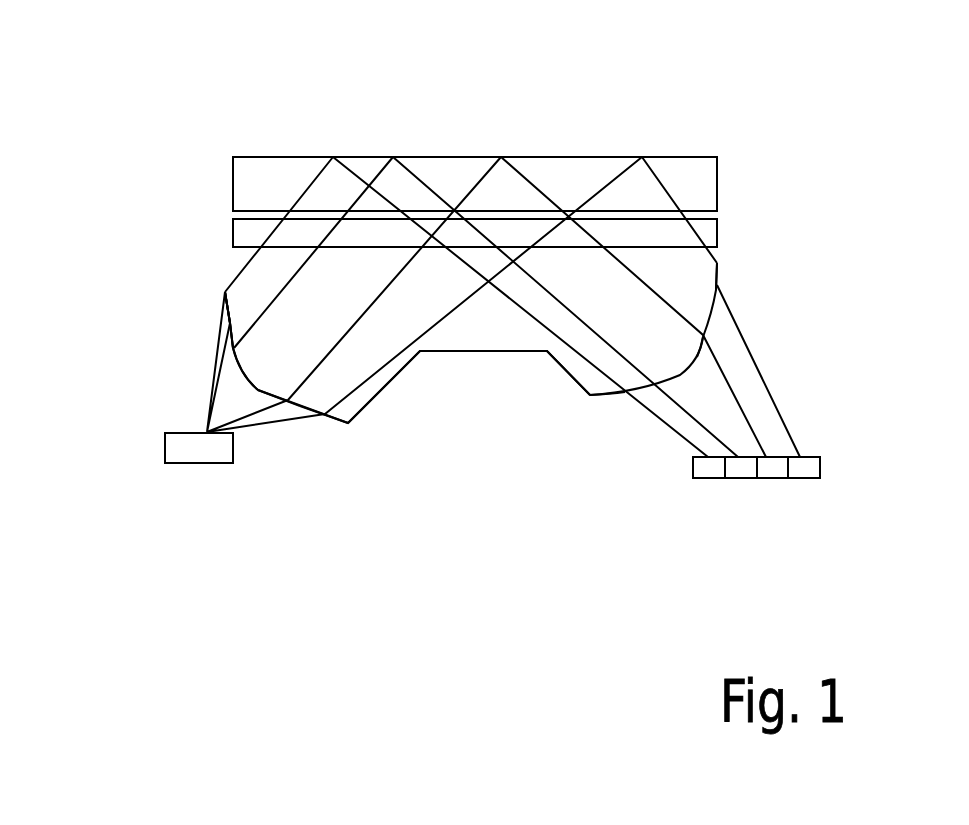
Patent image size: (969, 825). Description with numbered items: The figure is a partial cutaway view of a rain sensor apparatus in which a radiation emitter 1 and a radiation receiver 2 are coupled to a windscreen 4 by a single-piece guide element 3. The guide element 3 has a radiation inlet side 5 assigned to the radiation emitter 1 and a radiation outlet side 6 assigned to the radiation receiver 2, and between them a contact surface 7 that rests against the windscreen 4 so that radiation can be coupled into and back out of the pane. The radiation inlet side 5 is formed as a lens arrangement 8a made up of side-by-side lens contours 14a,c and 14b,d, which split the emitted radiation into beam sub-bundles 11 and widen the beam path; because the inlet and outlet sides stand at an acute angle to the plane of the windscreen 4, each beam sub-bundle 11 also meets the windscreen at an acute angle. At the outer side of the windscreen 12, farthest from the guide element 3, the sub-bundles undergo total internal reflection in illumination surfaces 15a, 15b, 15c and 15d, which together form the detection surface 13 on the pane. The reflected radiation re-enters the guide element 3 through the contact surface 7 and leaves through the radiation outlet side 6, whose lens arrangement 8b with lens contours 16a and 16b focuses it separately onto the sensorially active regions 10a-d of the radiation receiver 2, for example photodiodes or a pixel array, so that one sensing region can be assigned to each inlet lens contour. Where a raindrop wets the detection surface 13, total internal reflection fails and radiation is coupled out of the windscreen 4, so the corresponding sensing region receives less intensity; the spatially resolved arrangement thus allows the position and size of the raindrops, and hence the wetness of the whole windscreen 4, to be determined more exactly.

The radiation emitter 1 is at (200, 465).
The radiation receiver 2 is at (692, 465).
The guide element 3 is at (497, 340).
The windscreen 4 is at (720, 170).
The radiation inlet side 5 is at (246, 372).
The radiation outlet side 6 is at (712, 313).
The contact surface 7 is at (265, 220).
The lens arrangement 8a is at (222, 292).
The lens arrangement 8b is at (722, 272).
The sensorially active regions 10a-d is at (803, 478).
The beam sub-bundle 11 is at (260, 282).
The windscreen 12 is at (568, 157).
The detection surface 13 is at (455, 157).
The lens contours 14a,c is at (229, 314).
The lens contours 14b,d is at (334, 424).
The illumination surface 15a is at (333, 157).
The illumination surface 15b is at (501, 157).
The illumination surface 15c is at (393, 157).
The illumination surface 15d is at (642, 157).
The lens contour 16a is at (705, 352).
The lens contour 16b is at (612, 392).